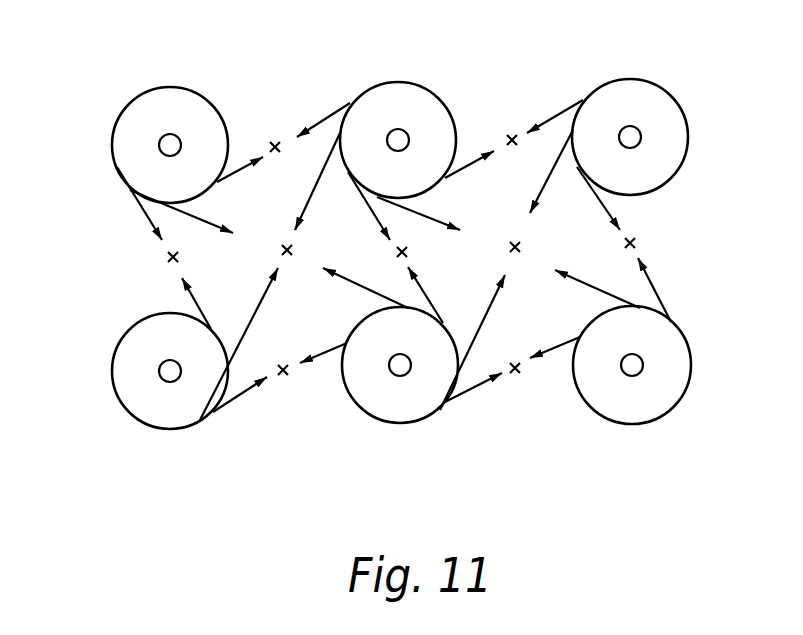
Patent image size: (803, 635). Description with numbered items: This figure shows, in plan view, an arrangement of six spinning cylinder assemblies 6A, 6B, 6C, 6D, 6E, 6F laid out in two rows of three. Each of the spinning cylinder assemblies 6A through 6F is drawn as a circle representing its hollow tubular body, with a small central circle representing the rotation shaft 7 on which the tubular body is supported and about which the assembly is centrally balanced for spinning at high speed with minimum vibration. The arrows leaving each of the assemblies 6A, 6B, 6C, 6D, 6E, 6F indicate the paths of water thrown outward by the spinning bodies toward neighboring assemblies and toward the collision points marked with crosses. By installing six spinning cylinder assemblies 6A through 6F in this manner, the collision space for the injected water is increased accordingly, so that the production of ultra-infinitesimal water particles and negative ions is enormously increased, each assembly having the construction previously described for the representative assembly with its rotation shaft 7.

The spinning cylinder assembly 6A is at (120, 102).
The spinning cylinder assembly 6B is at (338, 98).
The spinning cylinder assembly 6C is at (672, 90).
The spinning cylinder assembly 6D is at (118, 413).
The spinning cylinder assembly 6E is at (428, 423).
The spinning cylinder assembly 6F is at (677, 413).
The rotation shaft 7 is at (173, 135).